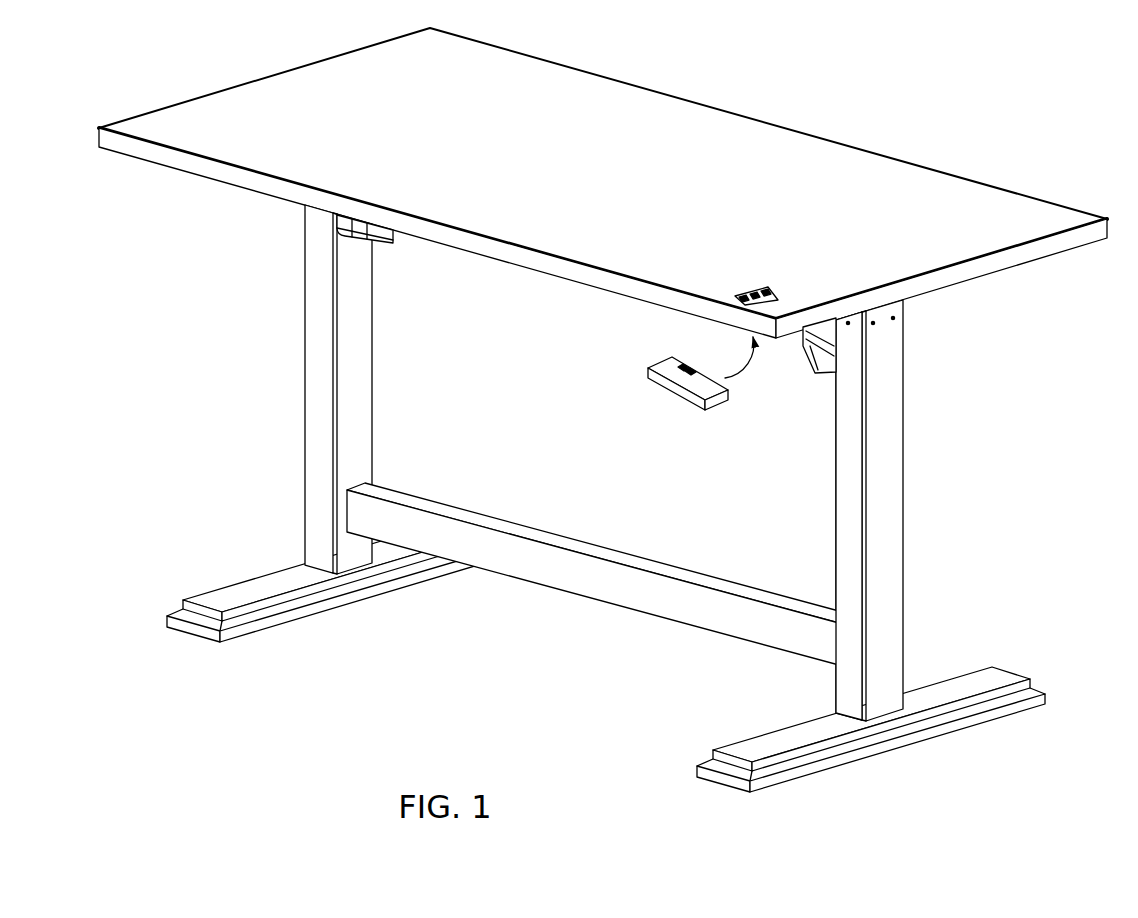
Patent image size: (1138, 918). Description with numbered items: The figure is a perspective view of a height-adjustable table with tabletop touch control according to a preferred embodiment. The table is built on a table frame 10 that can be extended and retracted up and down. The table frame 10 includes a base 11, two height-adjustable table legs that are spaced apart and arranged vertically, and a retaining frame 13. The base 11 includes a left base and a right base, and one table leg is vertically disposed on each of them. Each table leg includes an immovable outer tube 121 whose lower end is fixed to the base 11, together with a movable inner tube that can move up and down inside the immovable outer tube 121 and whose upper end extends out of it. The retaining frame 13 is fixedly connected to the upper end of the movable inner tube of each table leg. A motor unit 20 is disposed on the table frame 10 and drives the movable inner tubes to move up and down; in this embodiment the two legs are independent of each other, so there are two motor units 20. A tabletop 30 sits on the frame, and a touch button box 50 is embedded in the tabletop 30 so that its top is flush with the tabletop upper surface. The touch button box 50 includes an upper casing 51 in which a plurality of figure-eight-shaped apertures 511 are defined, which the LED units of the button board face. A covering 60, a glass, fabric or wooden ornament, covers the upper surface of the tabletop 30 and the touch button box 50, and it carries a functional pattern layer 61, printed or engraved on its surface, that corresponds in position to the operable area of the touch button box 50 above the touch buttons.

The table frame 10 is at (606, 498).
The base 11 is at (963, 713).
The immovable outer tube 121 is at (317, 342).
The retaining frame 13 is at (707, 608).
The motor unit 20 is at (393, 243).
The tabletop 30 is at (1027, 257).
The touch button box 50 is at (676, 385).
The upper casing 51 is at (663, 360).
The "8"-shaped aperture 511 is at (682, 365).
The covering 60 is at (800, 148).
The functional pattern layer 61 is at (752, 290).